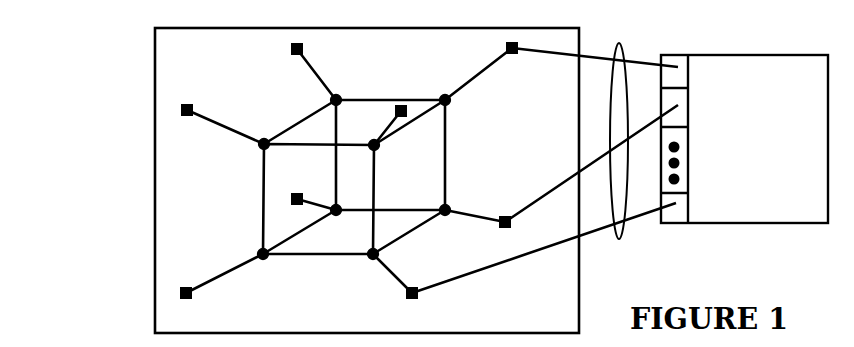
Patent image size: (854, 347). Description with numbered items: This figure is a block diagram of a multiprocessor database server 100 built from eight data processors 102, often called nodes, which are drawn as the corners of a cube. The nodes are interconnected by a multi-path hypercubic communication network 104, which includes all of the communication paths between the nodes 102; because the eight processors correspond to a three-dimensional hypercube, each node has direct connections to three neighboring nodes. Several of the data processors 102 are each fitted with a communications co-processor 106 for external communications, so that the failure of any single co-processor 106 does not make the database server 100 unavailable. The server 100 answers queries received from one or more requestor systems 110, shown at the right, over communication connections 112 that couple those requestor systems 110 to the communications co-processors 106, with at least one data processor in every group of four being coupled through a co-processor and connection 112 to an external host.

The multiprocessor database server 100 is at (148, 107).
The data processor 102 is at (452, 208).
The multi-path hypercubic communication network 104 is at (287, 130).
The communications co-processor 106 is at (514, 56).
The requestor system 110 is at (744, 139).
The communication connection 112 is at (625, 157).